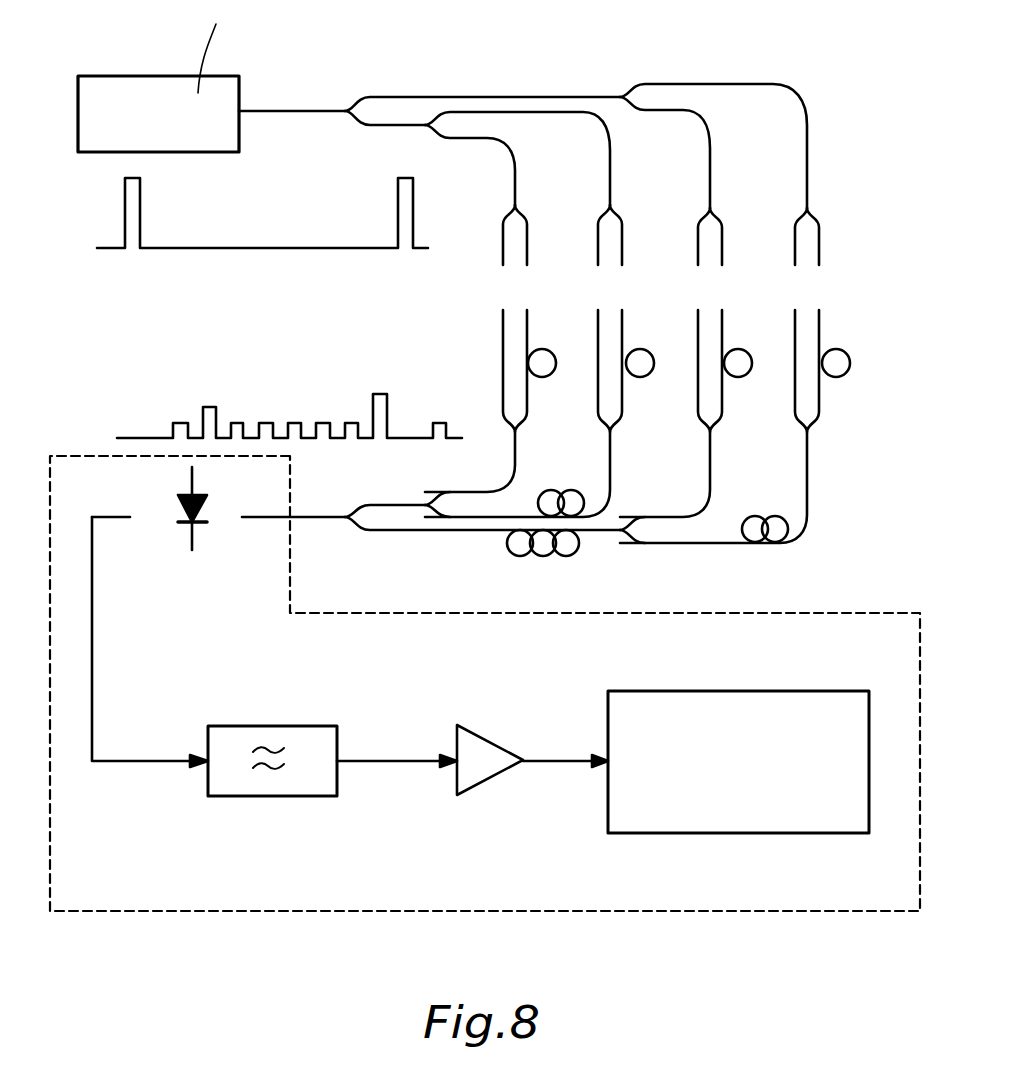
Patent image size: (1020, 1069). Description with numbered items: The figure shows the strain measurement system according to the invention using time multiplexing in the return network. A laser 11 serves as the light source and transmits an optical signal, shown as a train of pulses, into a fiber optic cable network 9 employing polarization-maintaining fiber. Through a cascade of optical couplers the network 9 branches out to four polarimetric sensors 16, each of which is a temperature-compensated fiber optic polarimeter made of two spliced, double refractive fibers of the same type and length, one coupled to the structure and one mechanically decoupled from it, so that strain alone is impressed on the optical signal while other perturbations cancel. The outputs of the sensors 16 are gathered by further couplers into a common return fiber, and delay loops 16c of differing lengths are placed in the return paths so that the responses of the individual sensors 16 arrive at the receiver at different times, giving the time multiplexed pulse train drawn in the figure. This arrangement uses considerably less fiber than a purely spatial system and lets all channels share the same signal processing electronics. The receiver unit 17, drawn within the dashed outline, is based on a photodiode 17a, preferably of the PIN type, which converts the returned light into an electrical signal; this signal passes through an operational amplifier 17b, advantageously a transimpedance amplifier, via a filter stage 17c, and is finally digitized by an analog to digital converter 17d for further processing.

The laser 11 is at (128, 76).
The fiber optic cable network 9 is at (293, 111).
The polarimetric sensor 16 is at (608, 298).
The delay loop 16c is at (553, 490).
The receiver unit 17 is at (485, 652).
The photodiode 17a is at (180, 510).
The operational amplifier 17b is at (490, 740).
The filter 17c is at (243, 726).
The A/D converter 17d is at (765, 691).